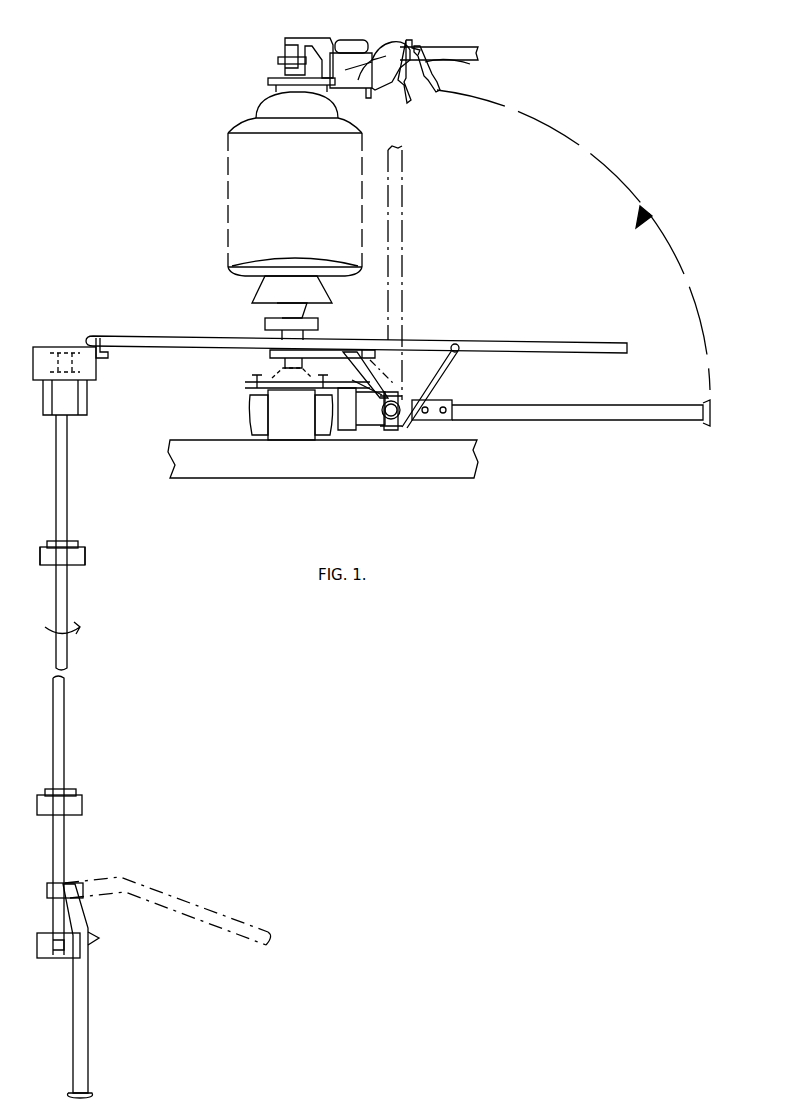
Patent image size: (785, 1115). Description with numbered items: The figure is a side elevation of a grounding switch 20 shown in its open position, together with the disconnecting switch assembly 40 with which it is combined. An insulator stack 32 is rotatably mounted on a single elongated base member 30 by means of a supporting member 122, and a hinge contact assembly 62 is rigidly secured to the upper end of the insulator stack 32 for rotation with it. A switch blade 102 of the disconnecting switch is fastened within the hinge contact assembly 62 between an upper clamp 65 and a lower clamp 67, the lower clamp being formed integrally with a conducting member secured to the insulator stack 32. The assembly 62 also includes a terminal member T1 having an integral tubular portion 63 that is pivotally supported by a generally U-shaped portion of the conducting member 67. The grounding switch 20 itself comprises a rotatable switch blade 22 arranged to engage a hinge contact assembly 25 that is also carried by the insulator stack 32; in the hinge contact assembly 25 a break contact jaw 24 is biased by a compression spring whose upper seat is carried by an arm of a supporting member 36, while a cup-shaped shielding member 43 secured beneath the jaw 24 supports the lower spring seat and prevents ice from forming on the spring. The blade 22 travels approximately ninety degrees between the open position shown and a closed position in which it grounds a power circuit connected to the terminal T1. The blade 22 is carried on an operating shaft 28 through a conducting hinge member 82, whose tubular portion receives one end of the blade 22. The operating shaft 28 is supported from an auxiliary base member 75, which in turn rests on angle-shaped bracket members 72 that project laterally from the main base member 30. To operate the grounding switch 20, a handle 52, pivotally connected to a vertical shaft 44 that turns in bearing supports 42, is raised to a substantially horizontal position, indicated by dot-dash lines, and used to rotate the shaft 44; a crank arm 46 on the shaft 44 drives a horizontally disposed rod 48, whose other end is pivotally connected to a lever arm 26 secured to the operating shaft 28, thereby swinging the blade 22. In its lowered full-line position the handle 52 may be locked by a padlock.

The grounding switch 20 is at (210, 243).
The switch blade 22 is at (398, 232).
The break contact jaw 24 is at (458, 60).
The hinge contact assembly 25 is at (460, 118).
The lever arm 26 is at (375, 372).
The operating shaft 28 is at (404, 424).
The base member 30 is at (238, 400).
The insulator stack 32 is at (232, 183).
The supporting member 36 is at (390, 45).
The disconnecting switch assembly 40 is at (520, 63).
The bearing supports 42 is at (84, 556).
The shielding member 43 is at (420, 46).
The vertical shaft 44 is at (66, 710).
The crank arm 46 is at (98, 360).
The rod 48 is at (178, 336).
The handle 52 is at (196, 908).
The hinge contact assembly 62 is at (340, 28).
The tubular portion 63 is at (290, 50).
The upper clamp 65 is at (360, 40).
The lower clamp 67 is at (352, 68).
The bracket member 72 is at (248, 376).
The auxiliary base member 75 is at (340, 425).
The hinge member 82 is at (450, 408).
The switch blade 102 is at (471, 46).
The supporting member 122 is at (280, 392).
The terminal member T1 is at (278, 60).